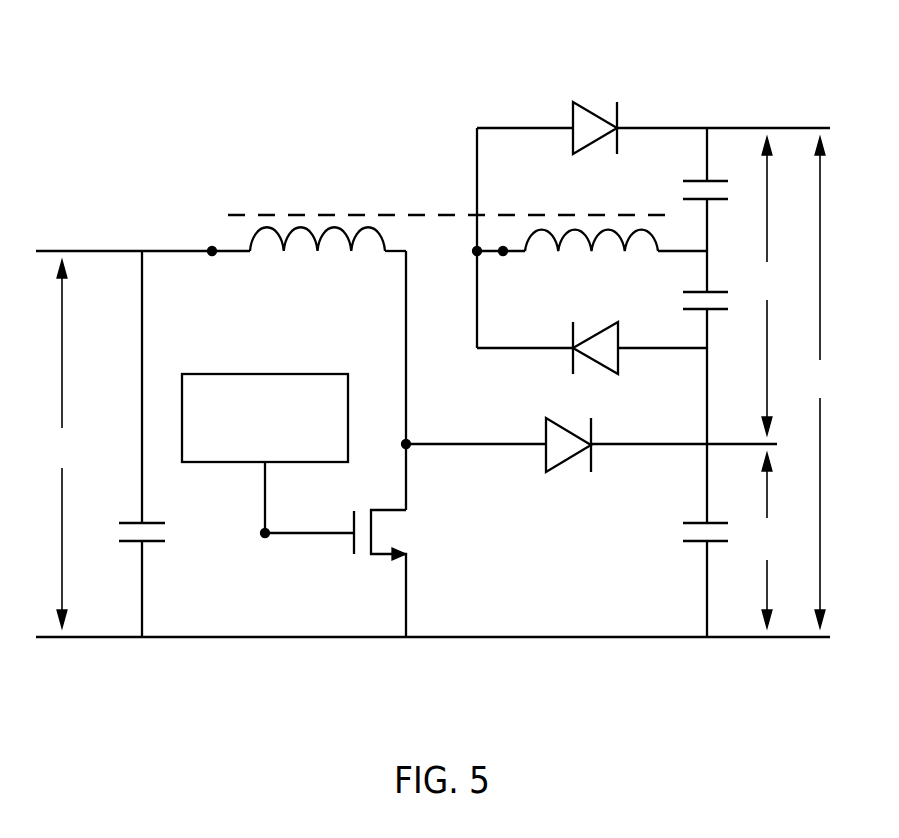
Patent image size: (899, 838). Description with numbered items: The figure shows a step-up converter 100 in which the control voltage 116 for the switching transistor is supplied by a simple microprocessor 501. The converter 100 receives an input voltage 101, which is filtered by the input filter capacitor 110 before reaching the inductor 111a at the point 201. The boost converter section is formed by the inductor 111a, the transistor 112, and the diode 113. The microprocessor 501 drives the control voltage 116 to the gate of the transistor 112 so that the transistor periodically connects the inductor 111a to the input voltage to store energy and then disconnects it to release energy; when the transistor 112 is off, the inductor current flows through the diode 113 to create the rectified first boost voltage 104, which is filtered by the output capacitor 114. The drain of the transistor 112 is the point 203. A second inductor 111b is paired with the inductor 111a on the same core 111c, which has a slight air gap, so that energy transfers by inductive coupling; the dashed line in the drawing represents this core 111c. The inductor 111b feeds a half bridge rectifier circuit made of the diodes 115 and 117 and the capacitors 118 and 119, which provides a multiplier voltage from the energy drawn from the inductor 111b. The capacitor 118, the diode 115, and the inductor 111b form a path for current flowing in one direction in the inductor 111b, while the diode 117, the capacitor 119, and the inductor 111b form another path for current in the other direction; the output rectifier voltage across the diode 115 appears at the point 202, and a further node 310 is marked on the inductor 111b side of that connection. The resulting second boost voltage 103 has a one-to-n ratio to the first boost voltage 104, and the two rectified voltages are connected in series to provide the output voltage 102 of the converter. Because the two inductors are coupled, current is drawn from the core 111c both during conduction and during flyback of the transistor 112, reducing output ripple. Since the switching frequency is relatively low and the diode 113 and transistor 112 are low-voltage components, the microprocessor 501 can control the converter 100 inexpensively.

The step-up converter 100 is at (256, 48).
The input voltage 101 is at (63, 478).
The output voltage 102 is at (822, 405).
The second boost voltage 103 is at (768, 310).
The first boost voltage 104 is at (766, 572).
The input filter capacitor 110 is at (158, 545).
The inductor 111a is at (284, 239).
The inductor 111b is at (625, 235).
The core 111c is at (408, 214).
The transistor 112 is at (381, 557).
The diode 113 is at (562, 465).
The output filter capacitor 114 is at (694, 545).
The diode 115 is at (600, 330).
The control voltage 116 is at (263, 538).
The diode 117 is at (588, 110).
The capacitor 118 is at (718, 311).
The capacitor 119 is at (718, 201).
The point 201 is at (213, 256).
The point 202 is at (476, 256).
The point 203 is at (402, 449).
The node 310 is at (504, 256).
The microprocessor 501 is at (265, 418).